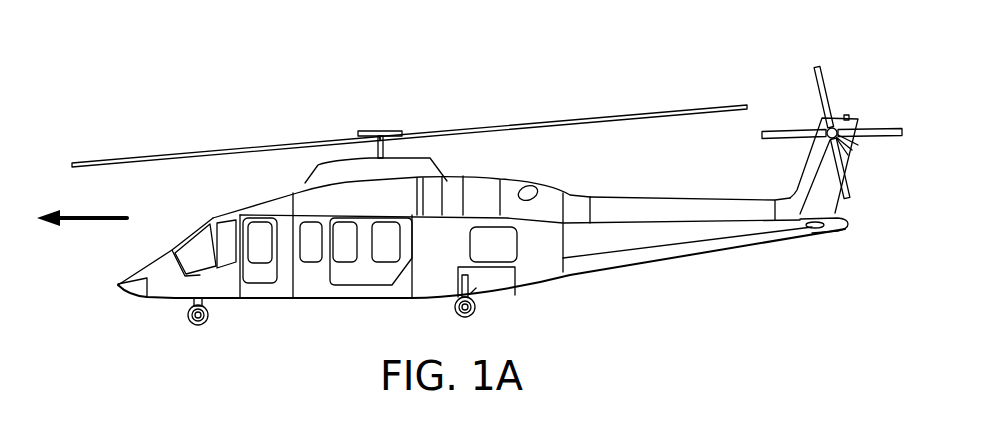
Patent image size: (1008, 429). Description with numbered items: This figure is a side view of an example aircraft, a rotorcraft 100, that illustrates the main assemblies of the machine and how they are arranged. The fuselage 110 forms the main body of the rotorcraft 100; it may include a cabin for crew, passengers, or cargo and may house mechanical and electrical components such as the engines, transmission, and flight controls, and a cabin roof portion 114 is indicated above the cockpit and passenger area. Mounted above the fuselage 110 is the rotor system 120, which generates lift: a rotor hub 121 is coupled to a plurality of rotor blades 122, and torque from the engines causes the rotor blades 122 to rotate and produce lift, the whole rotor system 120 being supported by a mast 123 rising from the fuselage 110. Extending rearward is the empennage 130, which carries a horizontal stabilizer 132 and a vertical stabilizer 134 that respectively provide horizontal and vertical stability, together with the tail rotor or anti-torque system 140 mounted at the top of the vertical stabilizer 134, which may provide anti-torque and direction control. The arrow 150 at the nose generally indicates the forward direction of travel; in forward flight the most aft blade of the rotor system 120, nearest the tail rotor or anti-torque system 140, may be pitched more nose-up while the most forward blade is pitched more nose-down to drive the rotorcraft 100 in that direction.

The rotorcraft 100 is at (265, 70).
The fuselage 110 is at (313, 300).
The cabin roof 114 is at (253, 187).
The rotor system 120 is at (394, 110).
The rotor hub 121 is at (367, 131).
The rotor blades 122 is at (215, 150).
The mast 123 is at (405, 141).
The empennage 130 is at (700, 255).
The horizontal stabilizer 132 is at (820, 233).
The vertical stabilizer 134 is at (797, 180).
The tail rotor or anti-torque system 140 is at (856, 100).
The arrow 150 is at (95, 222).